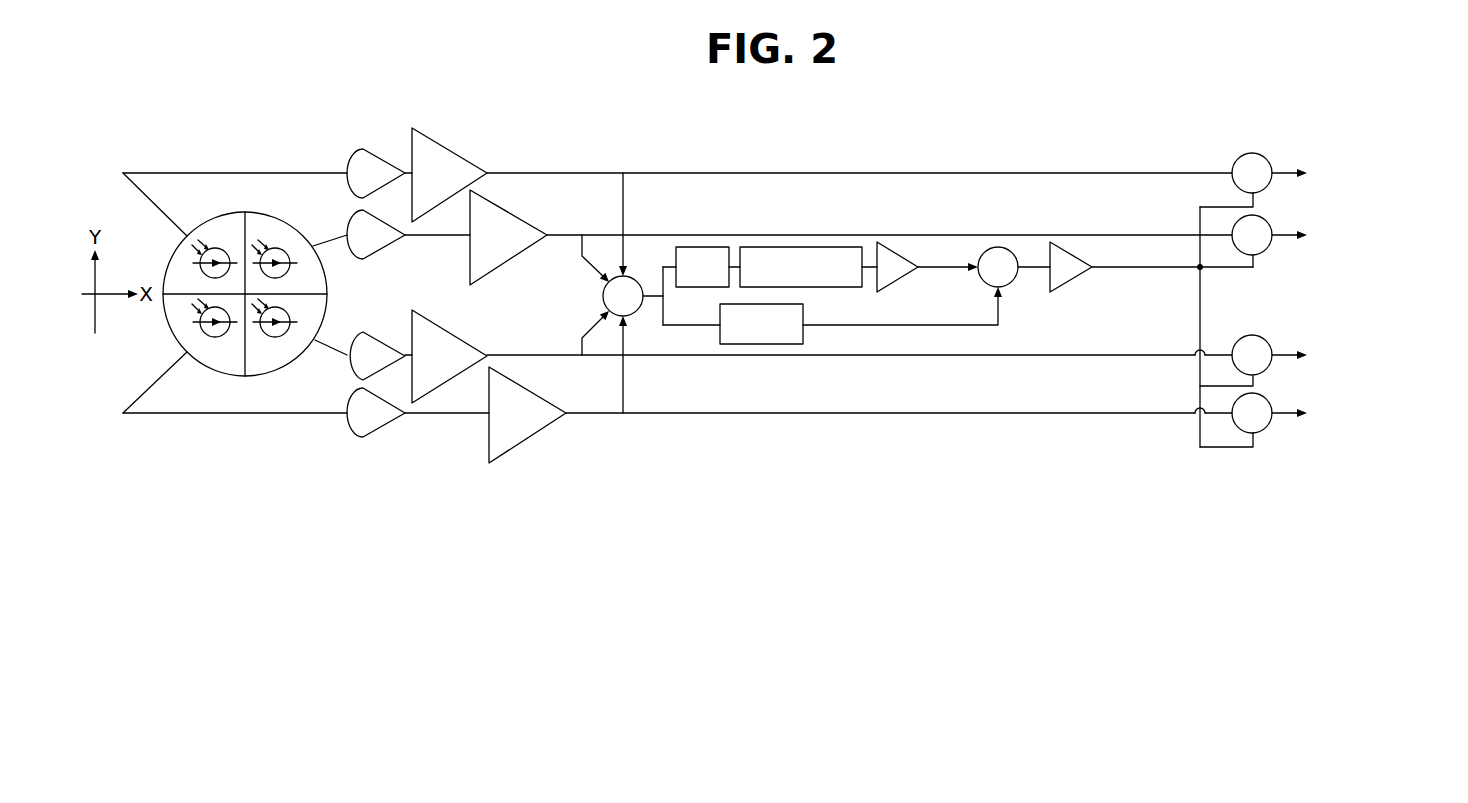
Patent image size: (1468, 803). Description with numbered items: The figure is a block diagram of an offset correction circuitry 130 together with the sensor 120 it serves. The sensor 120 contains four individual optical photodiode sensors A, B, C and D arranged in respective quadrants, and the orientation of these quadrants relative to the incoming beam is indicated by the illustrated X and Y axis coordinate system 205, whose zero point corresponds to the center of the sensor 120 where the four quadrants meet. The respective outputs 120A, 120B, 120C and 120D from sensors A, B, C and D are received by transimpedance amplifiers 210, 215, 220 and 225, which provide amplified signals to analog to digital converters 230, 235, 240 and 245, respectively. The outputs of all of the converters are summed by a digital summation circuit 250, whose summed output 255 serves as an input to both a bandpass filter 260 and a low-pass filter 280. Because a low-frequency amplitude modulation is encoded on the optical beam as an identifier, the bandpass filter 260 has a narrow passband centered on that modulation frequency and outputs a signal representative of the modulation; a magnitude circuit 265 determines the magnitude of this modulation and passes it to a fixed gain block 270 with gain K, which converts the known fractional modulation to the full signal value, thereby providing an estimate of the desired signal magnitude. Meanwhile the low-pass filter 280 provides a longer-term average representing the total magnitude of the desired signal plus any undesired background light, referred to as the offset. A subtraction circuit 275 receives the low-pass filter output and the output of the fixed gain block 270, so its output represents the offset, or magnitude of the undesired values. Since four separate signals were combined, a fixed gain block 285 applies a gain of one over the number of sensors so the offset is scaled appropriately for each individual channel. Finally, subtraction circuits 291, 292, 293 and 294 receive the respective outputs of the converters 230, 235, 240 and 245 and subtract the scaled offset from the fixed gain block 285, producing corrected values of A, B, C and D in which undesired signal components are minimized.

The X and Y axis coordinate system 205 is at (120, 225).
The sensor 120 is at (246, 205).
The output from sensor A 120A is at (167, 212).
The output from sensor B 120B is at (313, 246).
The output from sensor C 120C is at (312, 352).
The output from sensor D 120D is at (170, 385).
The offset correction circuitry 130 is at (440, 95).
The transimpedance amplifier 210 is at (386, 160).
The transimpedance amplifier 215 is at (380, 250).
The transimpedance amplifier 220 is at (388, 344).
The transimpedance amplifier 225 is at (380, 428).
The analog to digital converter 230 is at (453, 148).
The analog to digital converter 235 is at (512, 212).
The analog to digital converter 240 is at (450, 332).
The analog to digital converter 245 is at (538, 393).
The digital summation circuit 250 is at (638, 311).
The output from the summation circuit 255 is at (661, 276).
The bandpass filter 260 is at (700, 247).
The magnitude circuit 265 is at (795, 247).
The fixed gain block 270 is at (905, 252).
The subtraction circuit 275 is at (990, 251).
The low-pass filter 280 is at (760, 344).
The fixed gain block 285 is at (1080, 255).
The subtraction circuit 291 is at (1266, 159).
The subtraction circuit 292 is at (1268, 250).
The subtraction circuit 293 is at (1266, 342).
The subtraction circuit 294 is at (1268, 428).